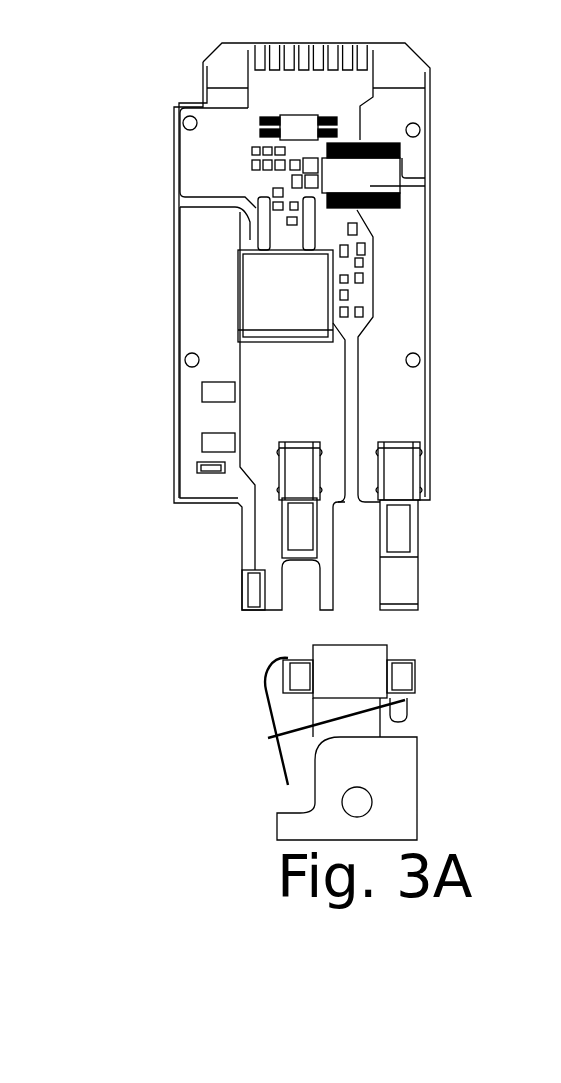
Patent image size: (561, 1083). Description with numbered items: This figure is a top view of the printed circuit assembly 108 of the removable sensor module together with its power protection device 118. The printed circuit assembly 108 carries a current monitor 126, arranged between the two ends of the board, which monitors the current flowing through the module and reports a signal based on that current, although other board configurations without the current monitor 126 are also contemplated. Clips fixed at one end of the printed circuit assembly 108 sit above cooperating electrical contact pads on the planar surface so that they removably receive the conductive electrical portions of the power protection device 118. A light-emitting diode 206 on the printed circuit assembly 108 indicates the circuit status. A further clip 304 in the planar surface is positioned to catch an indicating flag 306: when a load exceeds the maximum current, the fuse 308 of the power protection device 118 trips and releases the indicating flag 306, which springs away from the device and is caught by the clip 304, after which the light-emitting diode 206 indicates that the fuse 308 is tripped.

The printed circuit assembly 108 is at (441, 330).
The current monitor 126 is at (300, 298).
The light-emitting diode 206 is at (207, 462).
The clip 304 is at (245, 600).
The indicating flag 306 is at (273, 724).
The power protection device 118 is at (426, 714).
The fuse 308 is at (280, 738).